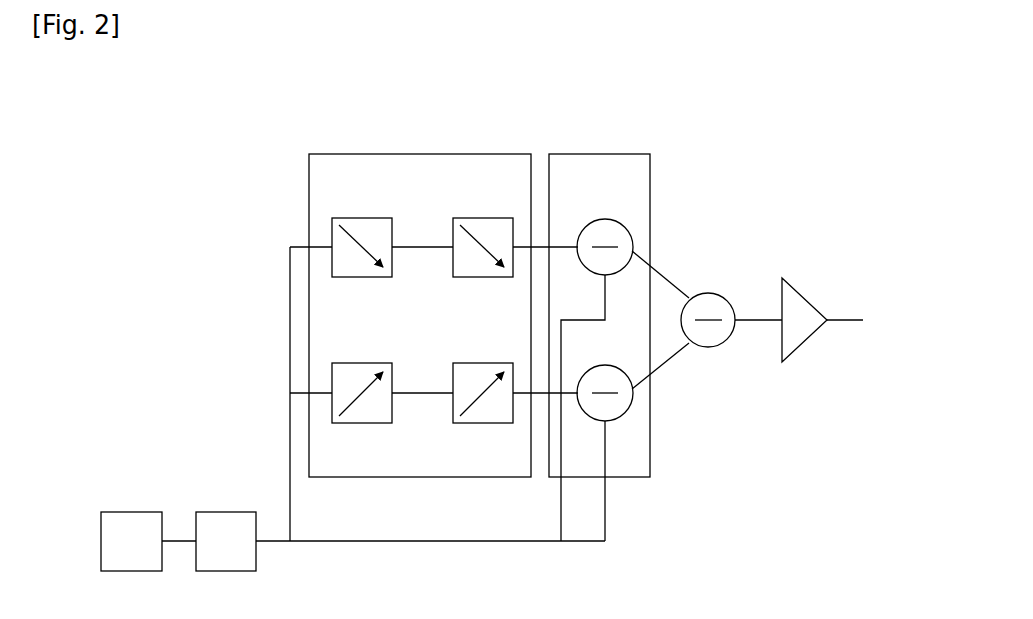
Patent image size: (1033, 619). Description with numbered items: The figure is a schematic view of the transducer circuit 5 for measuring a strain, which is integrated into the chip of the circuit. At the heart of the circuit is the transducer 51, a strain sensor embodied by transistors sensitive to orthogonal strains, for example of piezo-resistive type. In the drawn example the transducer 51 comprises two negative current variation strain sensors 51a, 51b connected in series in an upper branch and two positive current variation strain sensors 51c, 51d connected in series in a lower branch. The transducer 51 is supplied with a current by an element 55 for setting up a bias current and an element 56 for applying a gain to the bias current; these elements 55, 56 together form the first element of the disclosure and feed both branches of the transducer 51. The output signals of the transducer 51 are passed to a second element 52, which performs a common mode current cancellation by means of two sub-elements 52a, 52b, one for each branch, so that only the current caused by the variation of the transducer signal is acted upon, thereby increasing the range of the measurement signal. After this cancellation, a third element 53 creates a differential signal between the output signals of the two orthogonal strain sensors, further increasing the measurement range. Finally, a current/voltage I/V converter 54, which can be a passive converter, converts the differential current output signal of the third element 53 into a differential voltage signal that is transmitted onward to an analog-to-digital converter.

The transducer circuit 5 is at (200, 196).
The transducer 51 is at (342, 188).
The negative current variation strain sensor 51a is at (360, 277).
The negative current variation strain sensor 51b is at (482, 277).
The positive current variation strain sensor 51c is at (360, 423).
The positive current variation strain sensor 51d is at (482, 423).
The second element 52 is at (581, 188).
The sub-element 52a is at (618, 272).
The sub-element 52b is at (618, 418).
The third element 53 is at (709, 289).
The current/voltage I/V converter 54 is at (808, 330).
The element for setting up a bias current 55 is at (143, 552).
The element for applying a gain to the bias current 56 is at (237, 552).